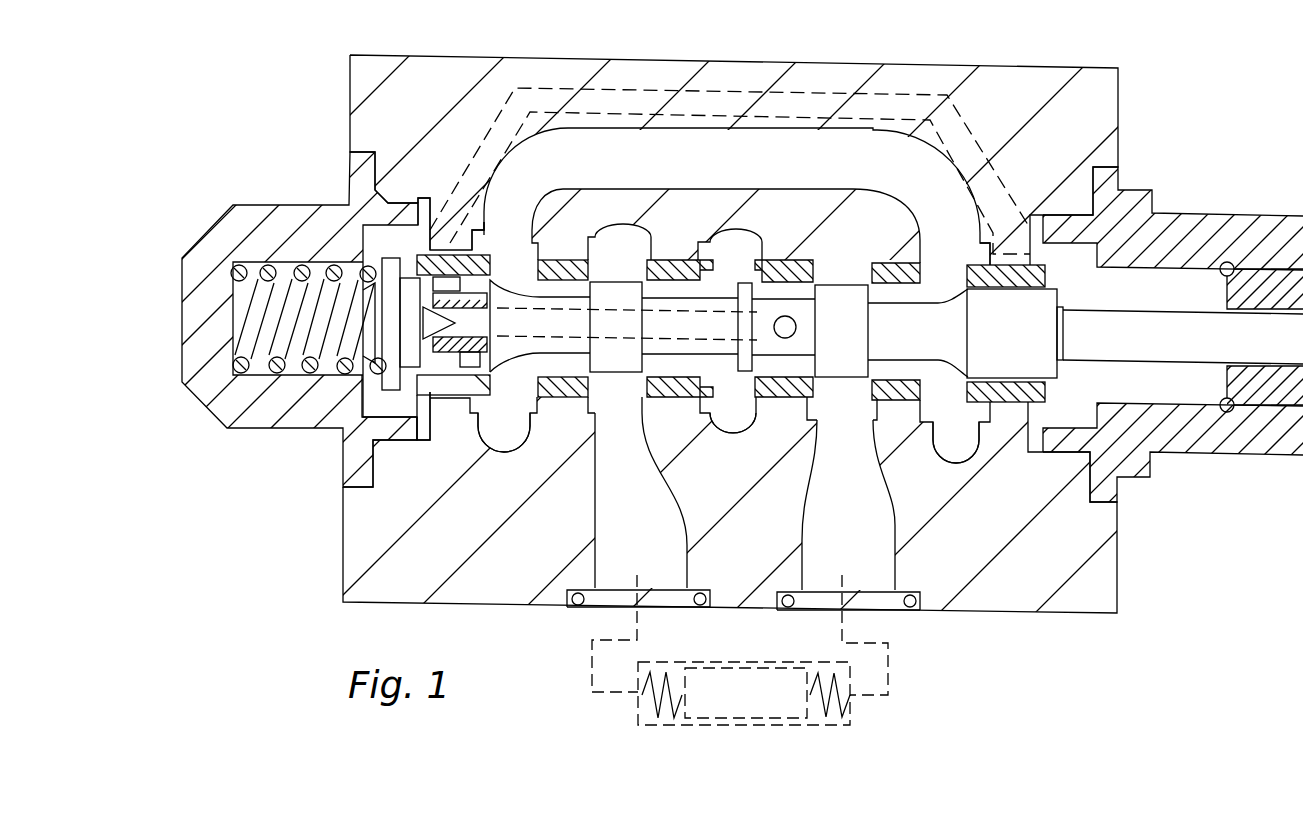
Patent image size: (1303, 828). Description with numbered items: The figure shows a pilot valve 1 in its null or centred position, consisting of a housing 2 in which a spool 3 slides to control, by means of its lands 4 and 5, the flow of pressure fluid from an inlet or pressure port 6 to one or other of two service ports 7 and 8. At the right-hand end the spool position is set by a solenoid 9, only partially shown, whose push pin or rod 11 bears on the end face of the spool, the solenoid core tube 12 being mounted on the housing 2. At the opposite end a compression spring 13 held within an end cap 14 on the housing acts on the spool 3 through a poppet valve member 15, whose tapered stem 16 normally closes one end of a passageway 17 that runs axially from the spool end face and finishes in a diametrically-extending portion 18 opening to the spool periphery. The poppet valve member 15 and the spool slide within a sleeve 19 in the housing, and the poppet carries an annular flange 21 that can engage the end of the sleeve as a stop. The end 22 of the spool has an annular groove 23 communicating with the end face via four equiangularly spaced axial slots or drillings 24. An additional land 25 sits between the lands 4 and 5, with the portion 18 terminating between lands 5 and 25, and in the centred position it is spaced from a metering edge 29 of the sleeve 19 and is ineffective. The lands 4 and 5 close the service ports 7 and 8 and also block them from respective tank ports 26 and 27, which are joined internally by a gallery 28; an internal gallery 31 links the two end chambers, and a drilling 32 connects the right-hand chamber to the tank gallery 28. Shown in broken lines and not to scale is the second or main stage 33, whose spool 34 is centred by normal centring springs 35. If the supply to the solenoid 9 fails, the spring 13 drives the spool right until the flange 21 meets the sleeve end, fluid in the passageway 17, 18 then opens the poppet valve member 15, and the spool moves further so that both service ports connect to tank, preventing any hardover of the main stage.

The pilot valve 1 is at (1108, 62).
The housing 2 is at (935, 75).
The spool 3 is at (690, 298).
The land 4 is at (622, 352).
The land 5 is at (850, 365).
The inlet or pressure port 6 is at (728, 422).
The service port 7 is at (641, 548).
The service port 8 is at (852, 548).
The solenoid 9 is at (1245, 265).
The push pin or rod 11 is at (1120, 342).
The core tube 12 is at (1138, 195).
The compression spring 13 is at (302, 358).
The end cap 14 is at (232, 407).
The poppet valve member 15 is at (410, 352).
The tapered stem 16 is at (497, 334).
The passageway 17 is at (488, 350).
The diametrically-extending portion 18 is at (797, 328).
The sleeve 19 is at (565, 262).
The annular flange 21 is at (422, 230).
The end of the spool 22 is at (493, 292).
The annular groove 23 is at (473, 280).
The axially-extending slots or drillings 24 is at (442, 270).
The additional land 25 is at (748, 360).
The tank port 26 is at (510, 437).
The tank port 27 is at (953, 448).
The gallery 28 is at (761, 172).
The metering edge 29 is at (768, 268).
The internal gallery 31 is at (741, 90).
The drilling 32 is at (1030, 240).
The second or main stage 33 is at (768, 726).
The spool 34 is at (763, 703).
The centring springs 35 is at (650, 708).